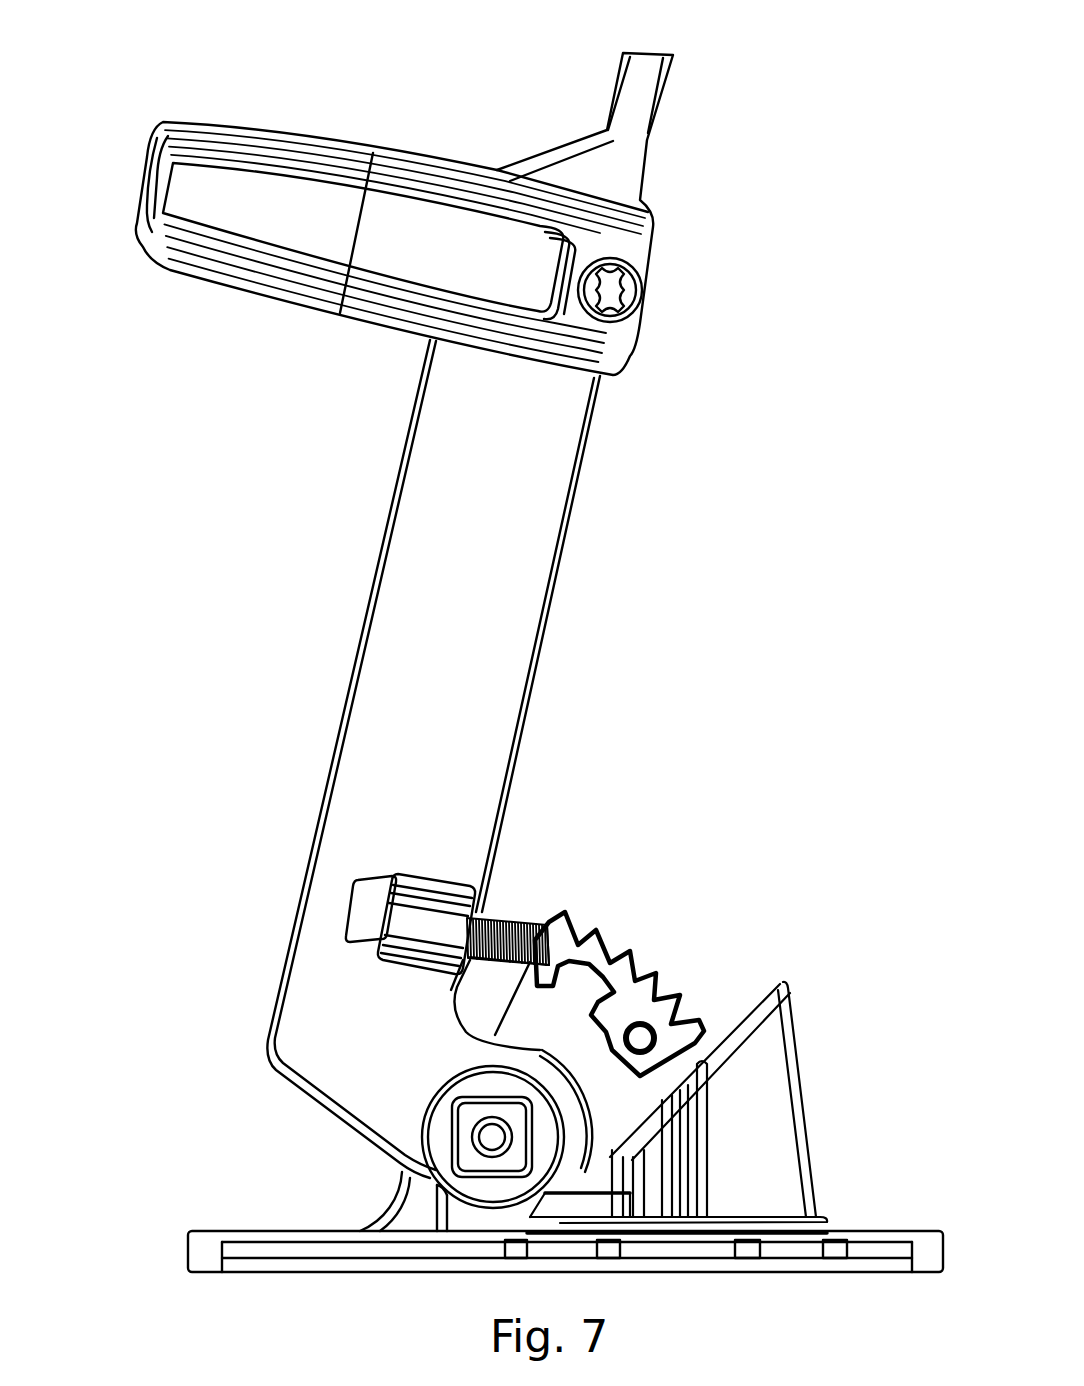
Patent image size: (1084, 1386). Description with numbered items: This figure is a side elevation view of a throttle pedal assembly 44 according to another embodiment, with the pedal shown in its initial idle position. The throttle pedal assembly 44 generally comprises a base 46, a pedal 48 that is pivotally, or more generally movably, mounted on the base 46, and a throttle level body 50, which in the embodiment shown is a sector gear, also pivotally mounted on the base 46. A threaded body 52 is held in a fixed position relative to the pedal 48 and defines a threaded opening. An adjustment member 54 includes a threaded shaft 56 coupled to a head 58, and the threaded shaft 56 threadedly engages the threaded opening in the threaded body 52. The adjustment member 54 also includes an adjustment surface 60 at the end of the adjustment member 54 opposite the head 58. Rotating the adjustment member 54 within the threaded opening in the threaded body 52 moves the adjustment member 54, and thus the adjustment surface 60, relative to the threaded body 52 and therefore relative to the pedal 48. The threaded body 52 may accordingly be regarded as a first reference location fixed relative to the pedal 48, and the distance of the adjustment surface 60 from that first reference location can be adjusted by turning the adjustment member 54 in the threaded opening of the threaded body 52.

The throttle pedal assembly 44 is at (119, 149).
The base 46 is at (254, 1231).
The pedal 48 is at (386, 520).
The throttle level body 50 is at (570, 913).
The threaded body 52 is at (398, 878).
The adjustment member 54 is at (507, 920).
The threaded shaft 56 is at (497, 960).
The head 58 is at (355, 890).
The adjustment surface 60 is at (547, 952).